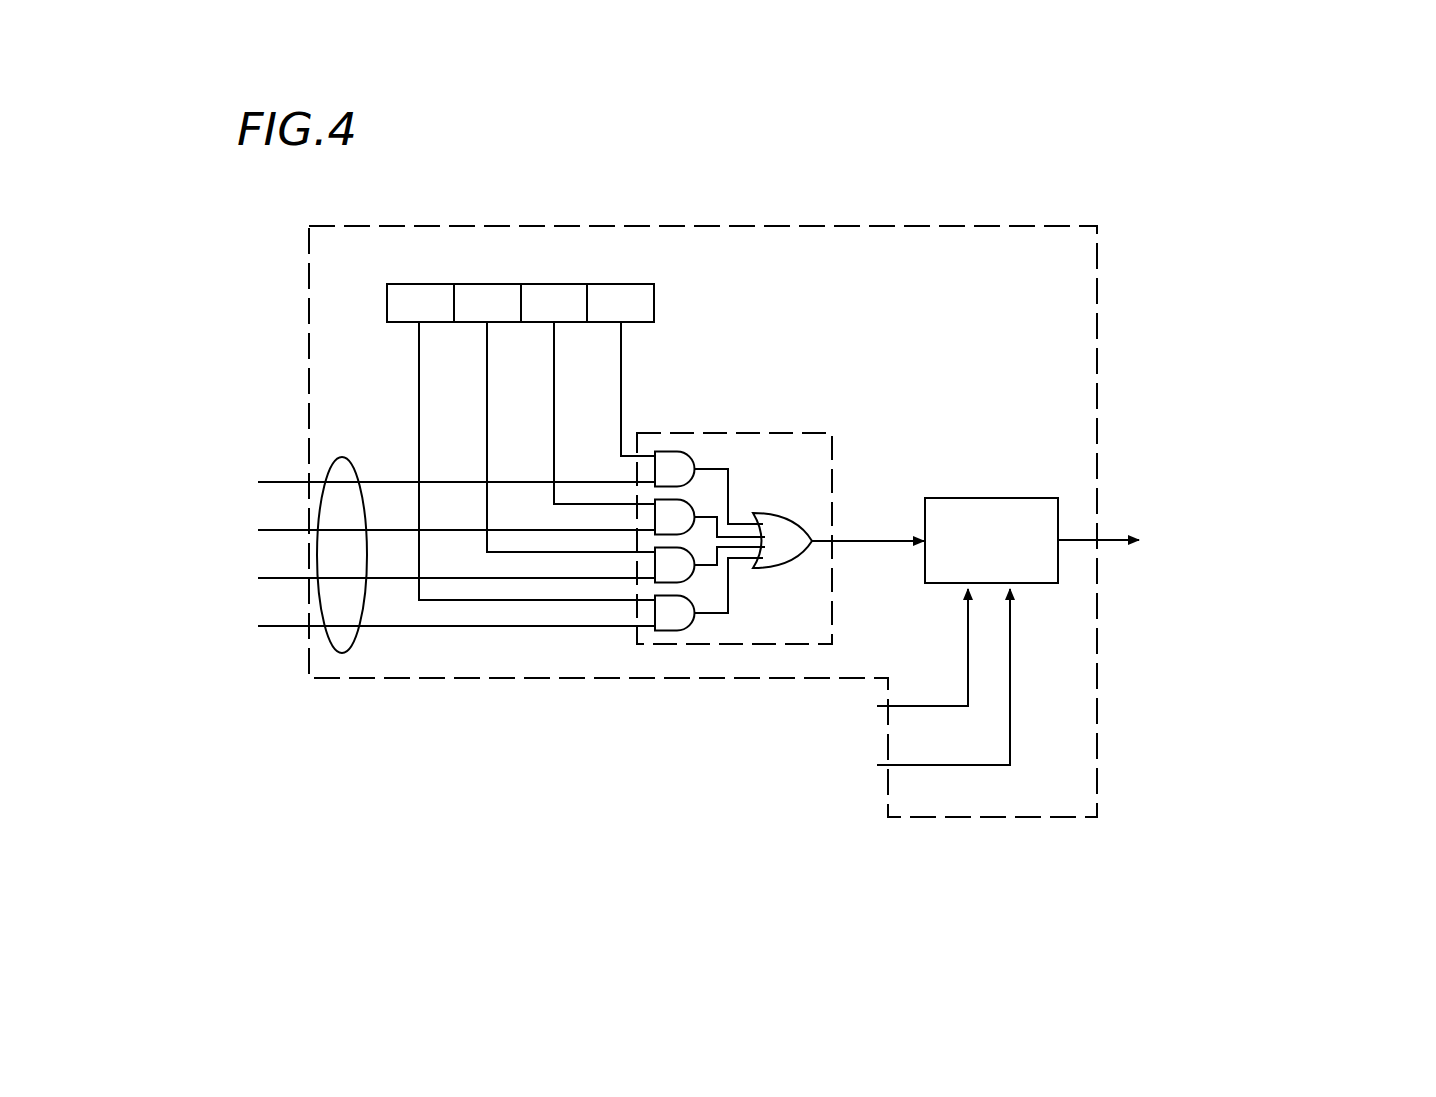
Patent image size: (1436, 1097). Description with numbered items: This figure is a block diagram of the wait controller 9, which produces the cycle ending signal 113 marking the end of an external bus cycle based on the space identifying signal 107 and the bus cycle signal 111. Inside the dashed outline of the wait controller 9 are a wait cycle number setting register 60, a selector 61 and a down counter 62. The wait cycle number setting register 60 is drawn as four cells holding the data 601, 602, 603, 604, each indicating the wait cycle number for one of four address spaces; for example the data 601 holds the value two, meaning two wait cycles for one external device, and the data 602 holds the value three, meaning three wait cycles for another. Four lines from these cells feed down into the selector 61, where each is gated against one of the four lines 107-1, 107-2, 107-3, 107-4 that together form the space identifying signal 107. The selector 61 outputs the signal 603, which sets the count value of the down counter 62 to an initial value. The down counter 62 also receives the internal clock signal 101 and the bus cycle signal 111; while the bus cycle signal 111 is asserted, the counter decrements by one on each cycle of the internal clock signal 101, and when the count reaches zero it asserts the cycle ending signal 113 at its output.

The wait controller 9 is at (1057, 223).
The wait cycle number setting register 60 is at (669, 392).
The data 601 is at (419, 284).
The data 602 is at (482, 284).
The data / signal 603 is at (552, 286).
The data 604 is at (620, 284).
The selector 61 is at (737, 430).
The down counter 62 is at (993, 497).
The internal clock signal 101 is at (928, 705).
The space identifying signal 107 is at (396, 579).
The space identifying signal 107-1 is at (290, 630).
The space identifying signal 107-2 is at (267, 583).
The space identifying signal 107-3 is at (272, 530).
The space identifying signal 107-4 is at (287, 482).
The bus cycle signal 111 is at (945, 767).
The cycle ending signal 113 is at (1085, 540).